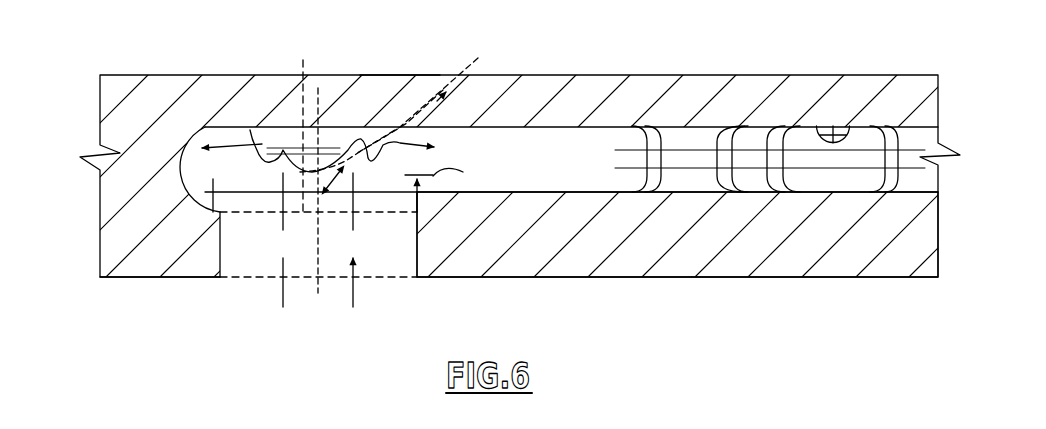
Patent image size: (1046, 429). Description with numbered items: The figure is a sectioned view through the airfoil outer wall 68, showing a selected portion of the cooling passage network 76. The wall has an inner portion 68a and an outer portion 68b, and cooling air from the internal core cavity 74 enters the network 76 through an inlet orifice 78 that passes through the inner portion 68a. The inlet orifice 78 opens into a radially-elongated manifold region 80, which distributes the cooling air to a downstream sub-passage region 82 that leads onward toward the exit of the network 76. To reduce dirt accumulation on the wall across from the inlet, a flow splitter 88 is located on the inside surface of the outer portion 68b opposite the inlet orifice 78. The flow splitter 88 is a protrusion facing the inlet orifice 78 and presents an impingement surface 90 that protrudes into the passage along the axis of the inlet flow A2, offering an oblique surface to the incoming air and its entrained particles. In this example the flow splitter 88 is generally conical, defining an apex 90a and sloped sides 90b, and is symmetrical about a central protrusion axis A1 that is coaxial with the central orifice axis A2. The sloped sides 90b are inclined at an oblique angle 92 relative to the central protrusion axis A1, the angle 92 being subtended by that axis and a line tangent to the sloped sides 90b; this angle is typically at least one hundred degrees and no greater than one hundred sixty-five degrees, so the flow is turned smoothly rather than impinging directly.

The airfoil outer wall 68 is at (108, 247).
The inner portion of the outer wall 68a is at (182, 278).
The outer portion of the outer wall 68b is at (393, 75).
The internal core cavity 74 is at (452, 327).
The cooling passage network 76 is at (505, 119).
The inlet orifice 78 is at (222, 258).
The manifold region 80 is at (598, 48).
The sub-passage region 82 is at (903, 48).
The flow splitter 88 is at (370, 140).
The impingement surface 90 is at (247, 130).
The apex 90a is at (303, 60).
The sloped sides 90b is at (413, 107).
The oblique angle 92 is at (345, 183).
The central protrusion axis A1 is at (318, 112).
The central orifice axis A2 is at (318, 262).